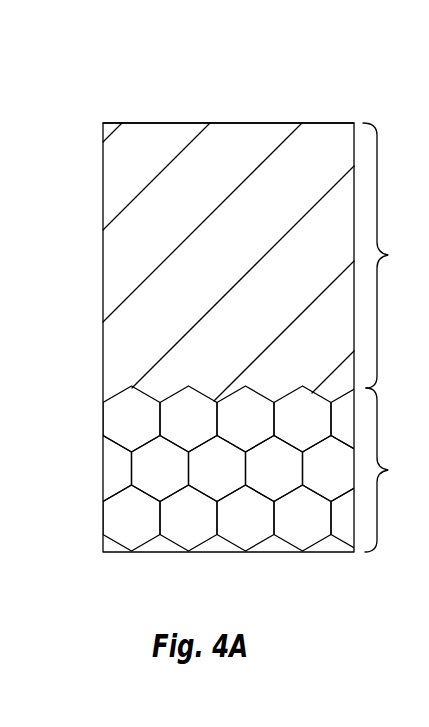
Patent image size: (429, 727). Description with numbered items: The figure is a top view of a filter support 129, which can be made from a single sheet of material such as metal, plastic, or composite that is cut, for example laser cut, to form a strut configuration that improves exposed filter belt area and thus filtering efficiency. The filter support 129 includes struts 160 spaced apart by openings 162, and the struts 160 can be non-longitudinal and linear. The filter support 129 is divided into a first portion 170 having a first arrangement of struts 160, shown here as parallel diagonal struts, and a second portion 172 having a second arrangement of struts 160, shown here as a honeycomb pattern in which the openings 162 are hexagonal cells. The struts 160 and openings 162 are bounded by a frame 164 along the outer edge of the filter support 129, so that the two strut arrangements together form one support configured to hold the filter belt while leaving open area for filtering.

The filter support 129 is at (150, 87).
The frame 164 is at (280, 123).
The struts 160 is at (315, 203).
The openings 162 is at (136, 353).
The first portion 170 is at (388, 255).
The second portion 172 is at (389, 470).